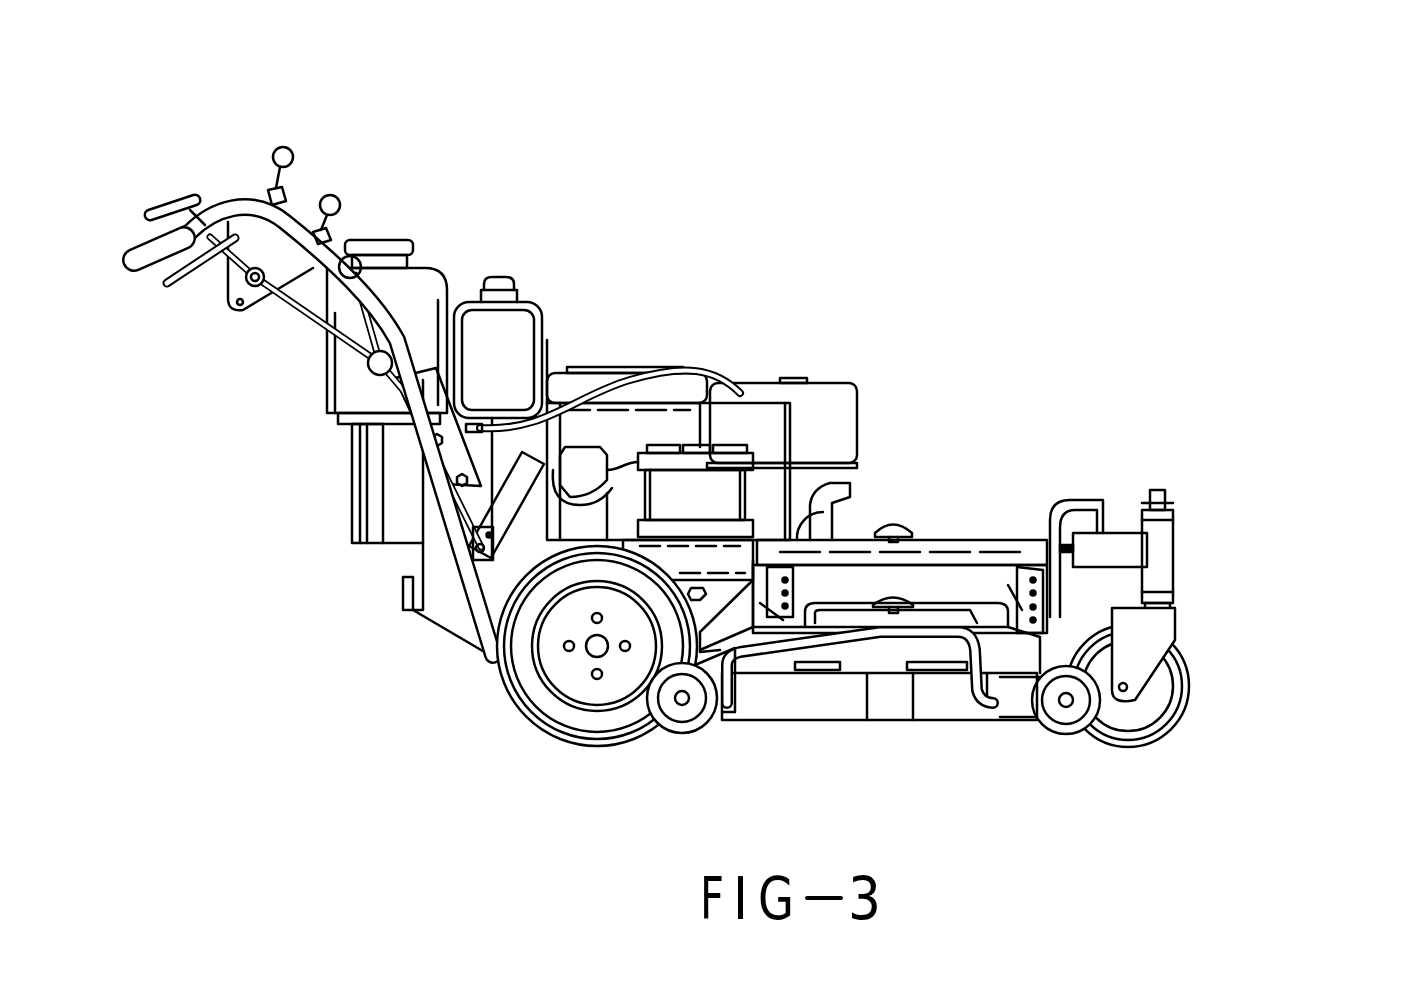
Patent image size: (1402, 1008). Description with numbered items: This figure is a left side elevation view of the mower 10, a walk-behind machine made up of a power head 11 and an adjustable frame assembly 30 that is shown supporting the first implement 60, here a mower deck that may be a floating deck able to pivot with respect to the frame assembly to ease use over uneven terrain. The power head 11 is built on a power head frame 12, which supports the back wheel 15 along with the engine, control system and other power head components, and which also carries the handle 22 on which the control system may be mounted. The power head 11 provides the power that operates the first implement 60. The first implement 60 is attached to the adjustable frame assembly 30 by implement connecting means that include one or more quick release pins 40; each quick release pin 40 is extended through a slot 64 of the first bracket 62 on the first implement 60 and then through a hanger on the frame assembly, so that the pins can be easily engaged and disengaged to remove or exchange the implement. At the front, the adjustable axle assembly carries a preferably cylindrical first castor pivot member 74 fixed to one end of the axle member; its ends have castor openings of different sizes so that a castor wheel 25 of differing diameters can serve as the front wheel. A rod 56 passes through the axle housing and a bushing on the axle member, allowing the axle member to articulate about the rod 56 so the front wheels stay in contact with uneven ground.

The mower 10 is at (1128, 203).
The power head 11 is at (582, 290).
The power head frame 12 is at (405, 592).
The back wheels 15 is at (532, 690).
The handle 22 is at (283, 218).
The castor wheels 25 is at (1158, 650).
The adjustable frame assembly 30 is at (832, 333).
The quick release pins 40 is at (768, 610).
The rod 56 is at (1097, 505).
The first implement 60 is at (937, 700).
The first bracket 62 is at (902, 580).
The slots 64 is at (1020, 567).
The first castor pivot member 74 is at (1167, 558).